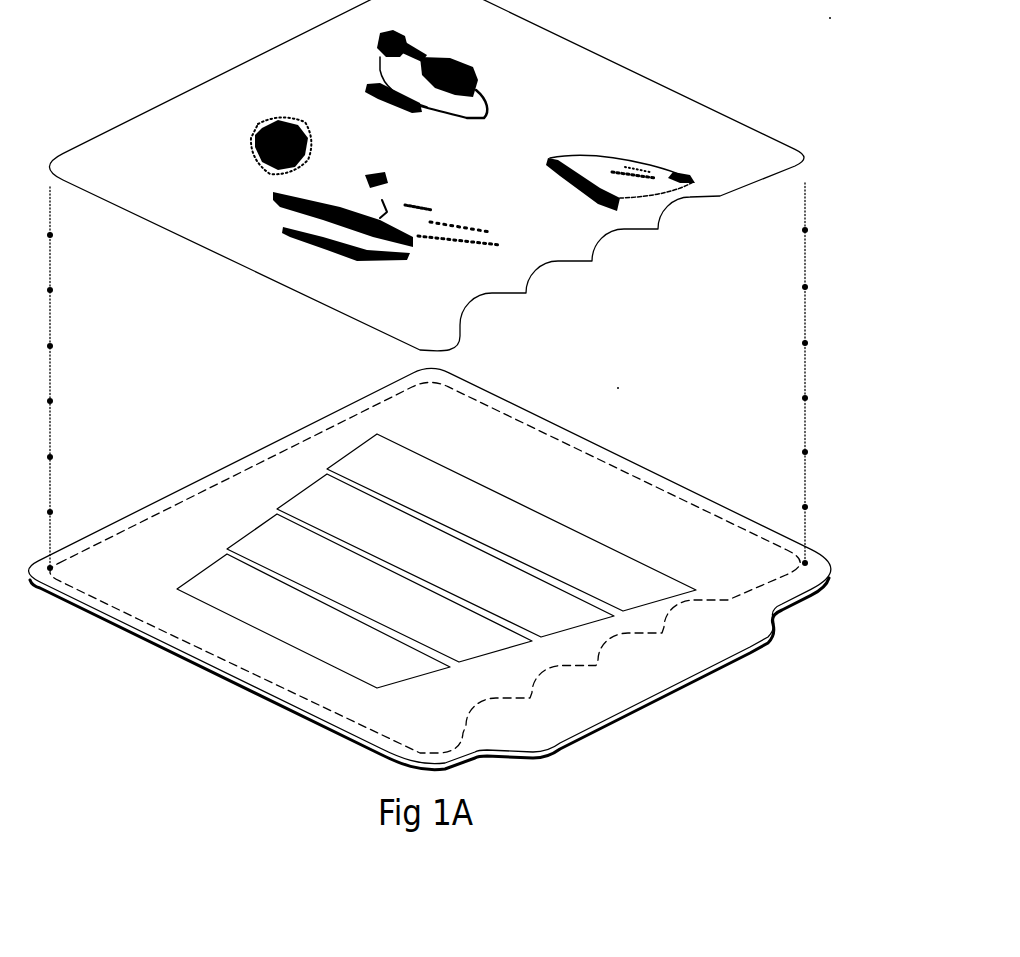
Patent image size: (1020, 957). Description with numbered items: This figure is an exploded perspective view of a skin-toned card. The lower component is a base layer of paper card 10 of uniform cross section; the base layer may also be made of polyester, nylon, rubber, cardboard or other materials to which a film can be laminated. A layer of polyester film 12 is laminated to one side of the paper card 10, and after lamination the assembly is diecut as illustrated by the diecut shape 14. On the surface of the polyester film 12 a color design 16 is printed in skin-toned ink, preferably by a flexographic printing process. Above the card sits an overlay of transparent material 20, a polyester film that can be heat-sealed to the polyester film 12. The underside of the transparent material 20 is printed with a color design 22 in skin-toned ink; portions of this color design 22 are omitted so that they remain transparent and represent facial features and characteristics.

The paper card 10 is at (140, 638).
The polyester film 12 is at (662, 502).
The diecut shape 14 is at (832, 565).
The color design 16 is at (237, 587).
The overlay of transparent material 20 is at (190, 245).
The color design 22 is at (270, 203).